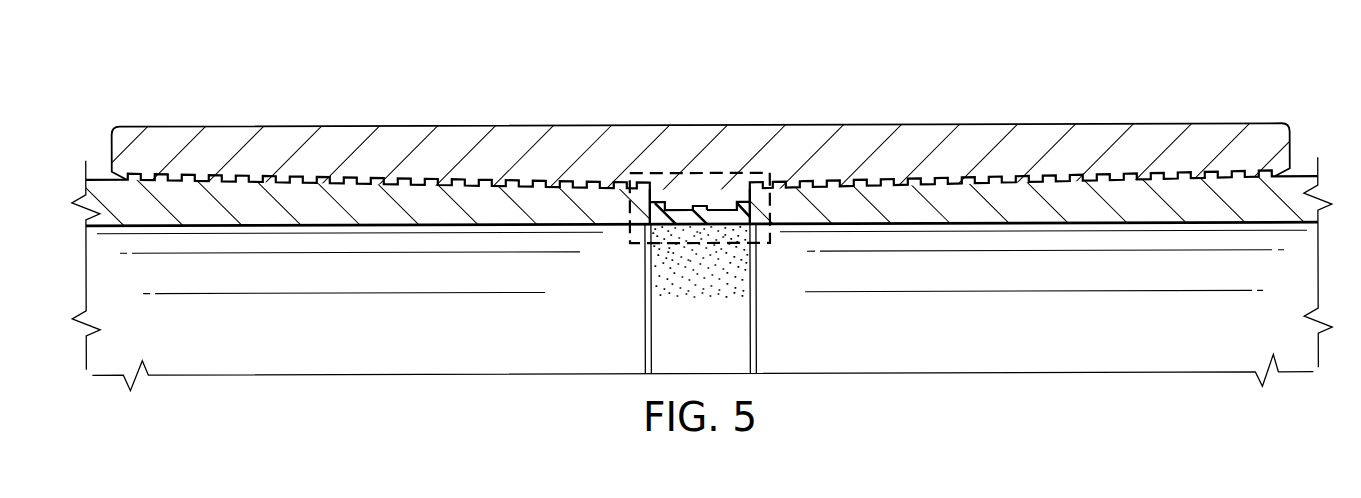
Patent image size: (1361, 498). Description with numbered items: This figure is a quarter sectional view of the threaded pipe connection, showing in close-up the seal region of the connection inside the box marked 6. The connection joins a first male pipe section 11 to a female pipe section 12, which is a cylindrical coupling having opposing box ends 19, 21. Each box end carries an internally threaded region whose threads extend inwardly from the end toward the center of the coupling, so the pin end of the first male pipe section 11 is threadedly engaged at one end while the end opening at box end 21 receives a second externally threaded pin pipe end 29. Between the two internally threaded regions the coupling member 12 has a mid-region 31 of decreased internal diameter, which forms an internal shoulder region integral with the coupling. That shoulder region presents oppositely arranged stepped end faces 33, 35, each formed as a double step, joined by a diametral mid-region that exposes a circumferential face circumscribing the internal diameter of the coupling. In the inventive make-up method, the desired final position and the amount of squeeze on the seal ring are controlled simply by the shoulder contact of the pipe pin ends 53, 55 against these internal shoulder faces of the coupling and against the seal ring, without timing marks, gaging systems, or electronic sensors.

The seal region box 6 is at (656, 166).
The first male pipe section 11 is at (1158, 191).
The female pipe section 12 is at (875, 133).
The box end 19 is at (1244, 177).
The box end 21 is at (132, 180).
The second externally threaded pin pipe end 29 is at (182, 193).
The mid-region of decreased internal diameter 31 is at (700, 186).
The stepped end face 33 is at (729, 205).
The stepped end face 35 is at (673, 200).
The pipe pin end 53 is at (617, 215).
The pipe pin end 55 is at (775, 195).